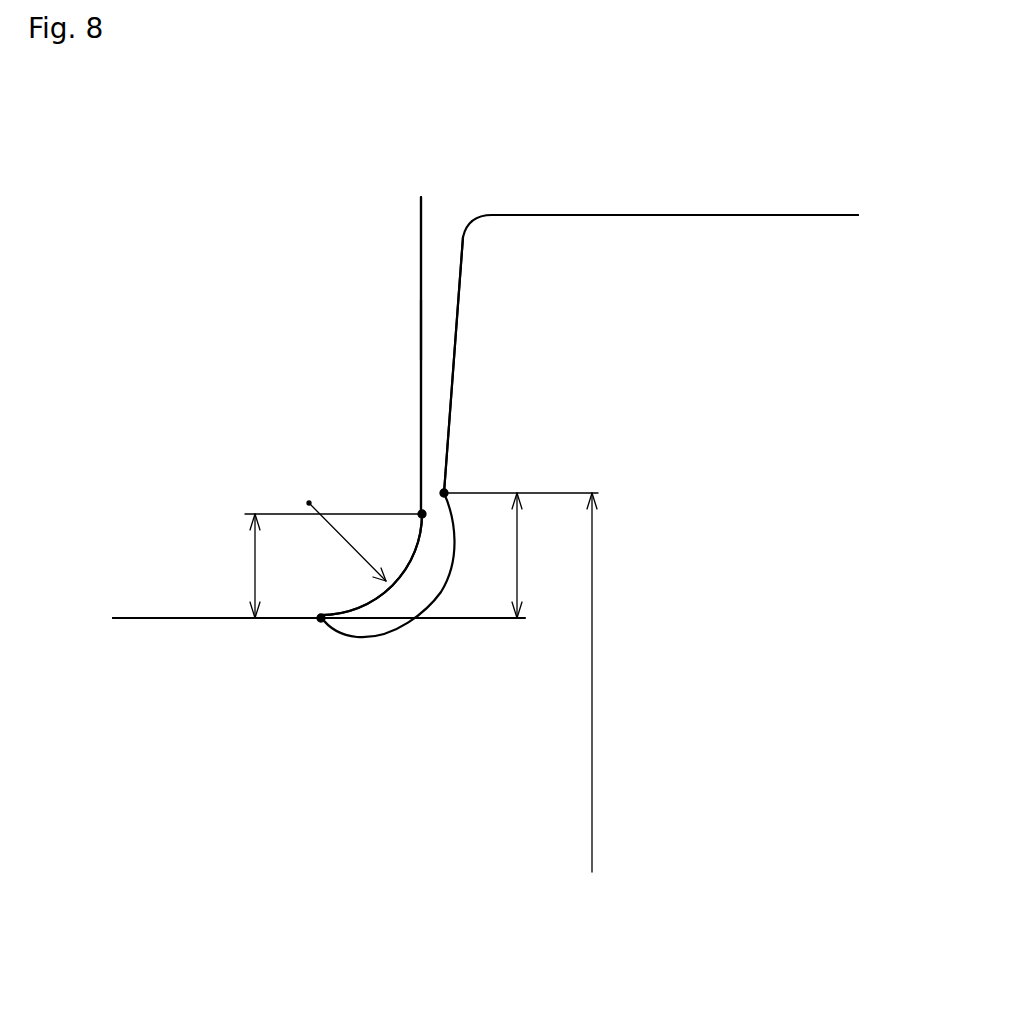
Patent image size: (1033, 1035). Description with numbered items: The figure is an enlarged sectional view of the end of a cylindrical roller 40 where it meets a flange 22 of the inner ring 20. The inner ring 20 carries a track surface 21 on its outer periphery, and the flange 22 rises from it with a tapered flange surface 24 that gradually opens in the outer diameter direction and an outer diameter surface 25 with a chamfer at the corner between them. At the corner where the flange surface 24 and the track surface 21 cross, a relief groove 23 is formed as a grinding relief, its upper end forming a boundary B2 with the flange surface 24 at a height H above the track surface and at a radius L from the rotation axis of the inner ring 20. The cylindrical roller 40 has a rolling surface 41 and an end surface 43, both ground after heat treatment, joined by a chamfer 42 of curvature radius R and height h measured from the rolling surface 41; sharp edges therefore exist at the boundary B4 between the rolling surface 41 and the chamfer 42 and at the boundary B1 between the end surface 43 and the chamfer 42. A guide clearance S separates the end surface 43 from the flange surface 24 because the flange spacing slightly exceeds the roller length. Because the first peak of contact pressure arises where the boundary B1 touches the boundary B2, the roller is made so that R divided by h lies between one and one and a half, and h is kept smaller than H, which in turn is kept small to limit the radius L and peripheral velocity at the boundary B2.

The inner ring 20 is at (787, 172).
The track surface 21 is at (222, 618).
The flange 22 is at (568, 242).
The relief groove 23 is at (443, 595).
The flange surface 24 is at (447, 382).
The outer diameter surface 25 is at (675, 214).
The cylindrical roller 40 is at (386, 172).
The rolling surface 41 is at (152, 620).
The chamfer 42 is at (376, 600).
The end surface 43 is at (422, 258).
The guide clearance S is at (433, 318).
The boundary between end surface and chamfer B1 is at (418, 511).
The boundary between relief groove and flange surface B2 is at (447, 492).
The boundary between rolling surface and chamfer B4 is at (321, 622).
The curvature radius of the chamfer R is at (346, 541).
The height of the chamfer h is at (325, 566).
The height of the relief groove H is at (521, 555).
The radius from the rotation axis line to the boundary B2 L is at (601, 682).